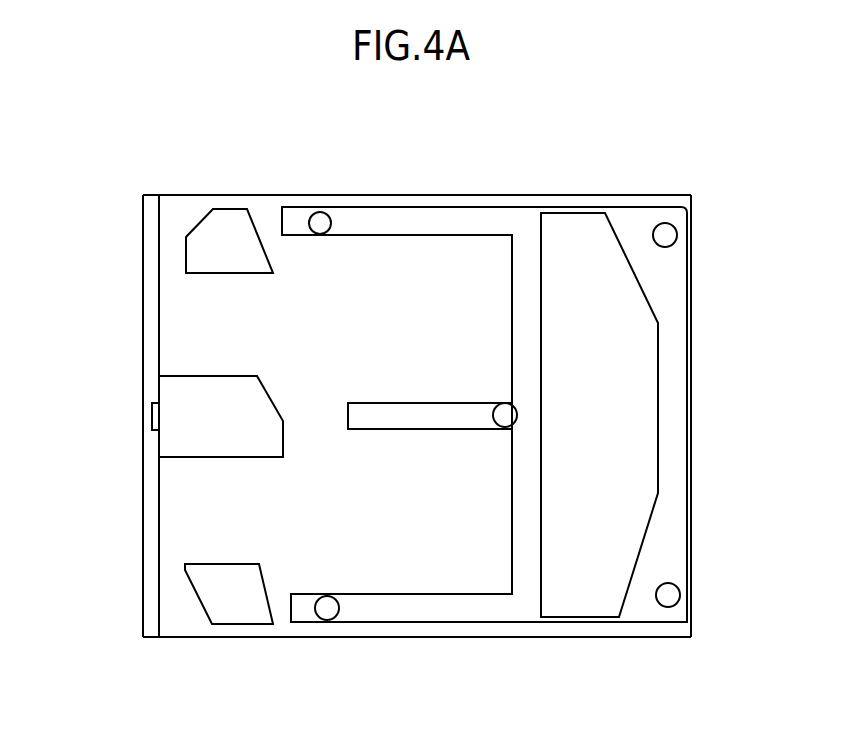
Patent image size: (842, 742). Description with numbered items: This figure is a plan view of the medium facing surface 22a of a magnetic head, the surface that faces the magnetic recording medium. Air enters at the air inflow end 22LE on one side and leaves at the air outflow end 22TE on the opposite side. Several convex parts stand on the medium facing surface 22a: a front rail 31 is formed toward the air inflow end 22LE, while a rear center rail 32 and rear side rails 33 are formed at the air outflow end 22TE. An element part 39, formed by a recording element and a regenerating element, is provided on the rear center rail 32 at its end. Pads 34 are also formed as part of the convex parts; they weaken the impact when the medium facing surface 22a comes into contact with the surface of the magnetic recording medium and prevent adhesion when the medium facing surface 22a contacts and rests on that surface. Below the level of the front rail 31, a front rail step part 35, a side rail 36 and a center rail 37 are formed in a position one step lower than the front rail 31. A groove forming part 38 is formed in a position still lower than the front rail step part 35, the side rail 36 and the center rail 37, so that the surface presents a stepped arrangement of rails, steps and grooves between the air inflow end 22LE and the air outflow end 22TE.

The medium facing surface 22a is at (163, 166).
The air outflow end 22TE is at (143, 303).
The air inflow end 22LE is at (690, 423).
The front rail 31 is at (603, 320).
The rear center rail 32 is at (193, 443).
The rear side rails 33 is at (229, 224).
The pads 34 is at (320, 223).
The front rail step part 35 is at (670, 523).
The side rail 36 is at (459, 217).
The center rail 37 is at (390, 412).
The groove forming part 38 is at (430, 321).
The element part 39 is at (152, 411).